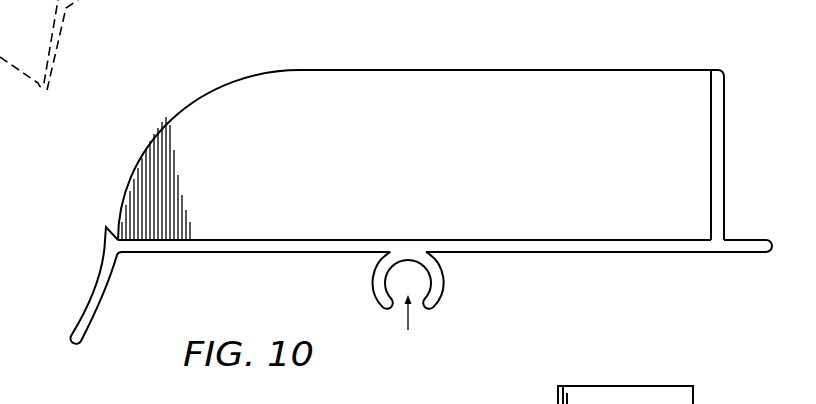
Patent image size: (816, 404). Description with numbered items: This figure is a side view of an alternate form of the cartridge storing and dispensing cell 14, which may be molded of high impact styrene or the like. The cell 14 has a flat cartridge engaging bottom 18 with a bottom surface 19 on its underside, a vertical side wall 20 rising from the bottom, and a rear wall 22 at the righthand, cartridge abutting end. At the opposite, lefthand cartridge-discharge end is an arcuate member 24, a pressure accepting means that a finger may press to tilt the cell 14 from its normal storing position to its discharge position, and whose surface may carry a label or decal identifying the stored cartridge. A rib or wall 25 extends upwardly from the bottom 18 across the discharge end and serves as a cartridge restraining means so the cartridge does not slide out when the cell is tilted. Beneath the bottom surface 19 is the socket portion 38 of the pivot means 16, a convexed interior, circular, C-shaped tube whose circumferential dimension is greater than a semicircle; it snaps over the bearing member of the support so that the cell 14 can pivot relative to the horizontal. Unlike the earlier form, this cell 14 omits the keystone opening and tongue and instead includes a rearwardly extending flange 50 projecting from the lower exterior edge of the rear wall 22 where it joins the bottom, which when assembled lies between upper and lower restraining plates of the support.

The cartridge storing and dispensing cell 14 is at (579, 65).
The pivot means 16 is at (408, 327).
The flat cartridge engaging bottom 18 is at (289, 240).
The bottom surface 19 is at (238, 257).
The vertical side wall 20 is at (484, 144).
The rear wall 22 is at (711, 163).
The arcuate member 24 is at (88, 300).
The rib or wall 25 is at (114, 226).
The socket portion 38 is at (444, 288).
The rearwardly extending flange 50 is at (741, 238).